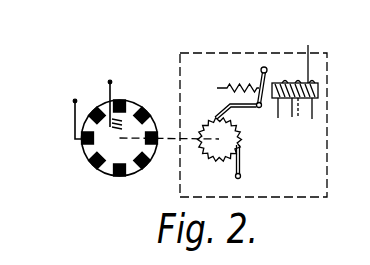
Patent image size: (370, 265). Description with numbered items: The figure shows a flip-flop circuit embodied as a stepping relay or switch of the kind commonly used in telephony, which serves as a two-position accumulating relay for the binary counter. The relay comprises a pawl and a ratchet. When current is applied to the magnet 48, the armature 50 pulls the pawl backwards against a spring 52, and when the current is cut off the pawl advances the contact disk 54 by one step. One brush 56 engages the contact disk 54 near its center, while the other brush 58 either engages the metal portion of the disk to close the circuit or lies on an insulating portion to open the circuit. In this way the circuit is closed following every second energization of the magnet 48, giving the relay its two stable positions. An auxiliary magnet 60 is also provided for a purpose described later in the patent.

The magnet 48 is at (278, 83).
The armature 50 is at (262, 68).
The spring 52 is at (236, 84).
The contact disk 54 is at (89, 148).
The brush 56 is at (112, 85).
The brush 58 is at (73, 108).
The auxiliary magnet 60 is at (308, 48).